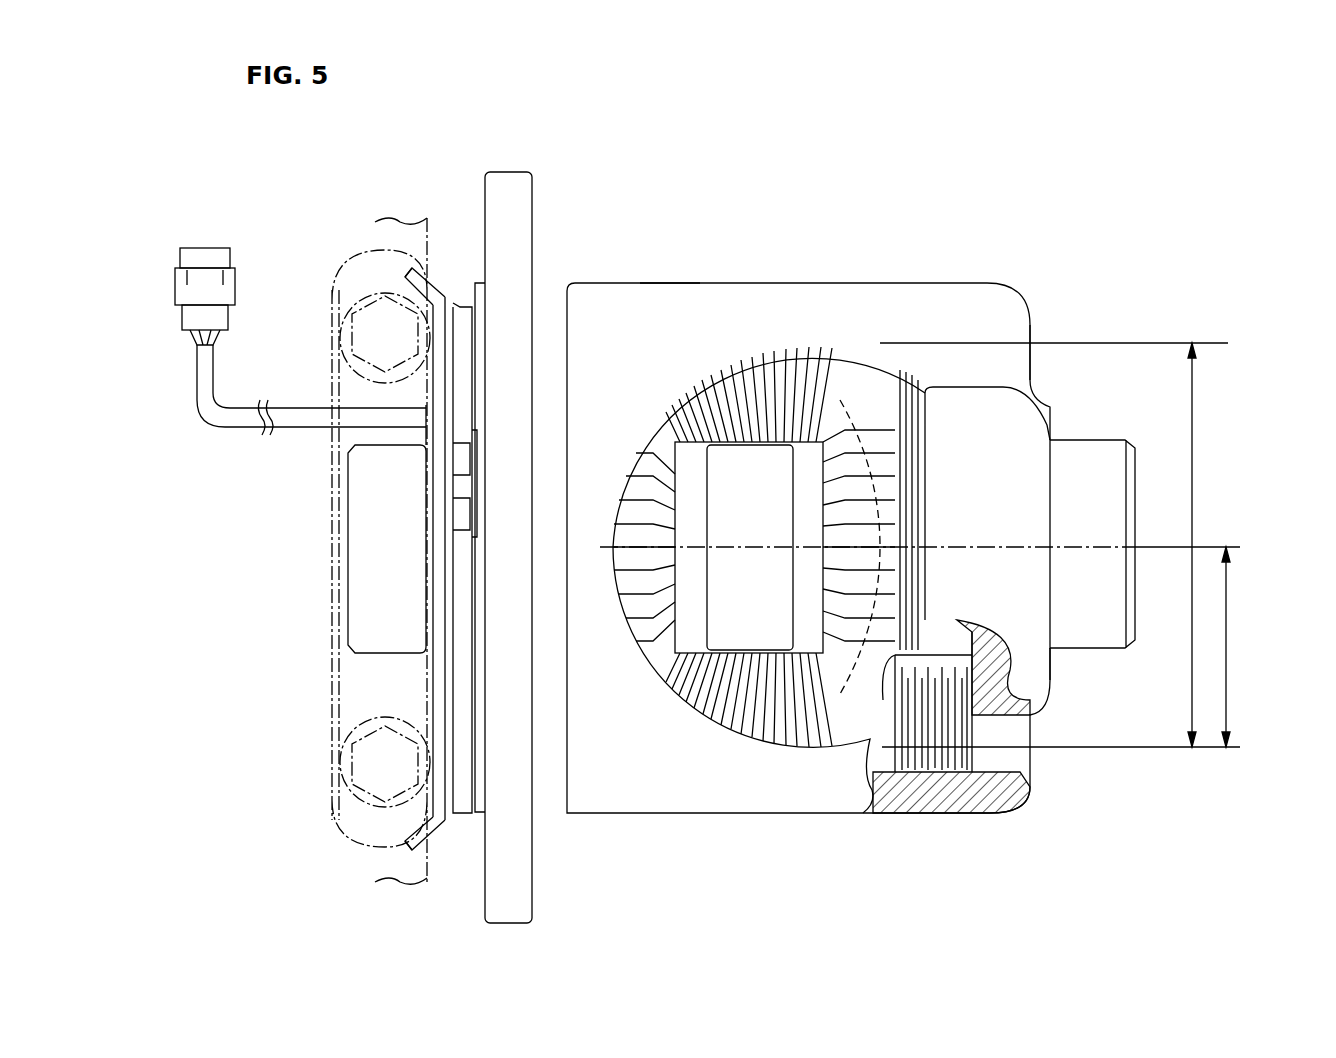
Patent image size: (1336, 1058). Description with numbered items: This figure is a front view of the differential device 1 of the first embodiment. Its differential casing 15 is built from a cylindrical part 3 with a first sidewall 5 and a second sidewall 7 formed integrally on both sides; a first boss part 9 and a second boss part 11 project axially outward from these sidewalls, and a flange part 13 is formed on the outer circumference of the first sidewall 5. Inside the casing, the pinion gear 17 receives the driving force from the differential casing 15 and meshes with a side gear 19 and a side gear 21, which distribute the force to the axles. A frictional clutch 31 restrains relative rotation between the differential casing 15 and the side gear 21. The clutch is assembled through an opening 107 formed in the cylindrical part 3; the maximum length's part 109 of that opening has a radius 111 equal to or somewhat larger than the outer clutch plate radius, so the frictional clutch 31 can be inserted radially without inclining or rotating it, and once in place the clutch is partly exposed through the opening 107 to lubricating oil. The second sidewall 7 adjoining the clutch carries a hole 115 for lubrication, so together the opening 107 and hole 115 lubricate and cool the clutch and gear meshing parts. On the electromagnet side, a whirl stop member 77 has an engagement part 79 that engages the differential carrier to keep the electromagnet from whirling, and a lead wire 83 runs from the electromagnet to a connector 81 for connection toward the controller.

The differential device 1 is at (778, 112).
The cylindrical part 3 is at (627, 283).
The first sidewall 5 is at (470, 295).
The second sidewall 7 is at (1030, 318).
The first boss part 9 is at (350, 605).
The second boss part 11 is at (1083, 440).
The flange part 13 is at (514, 172).
The differential casing 15 is at (692, 282).
The pinion gear 17 is at (780, 360).
The side gear 19 is at (641, 605).
The side gear 21 is at (870, 445).
The frictional clutch 31 is at (932, 778).
The whirl stop member 77 is at (407, 272).
The engagement part 79 is at (412, 828).
The connector 81 is at (175, 290).
The lead wire 83 is at (200, 382).
The opening 107 is at (737, 735).
The maximum length's part 109 is at (1192, 452).
The radius 111 is at (1226, 647).
The hole 115 is at (1005, 766).